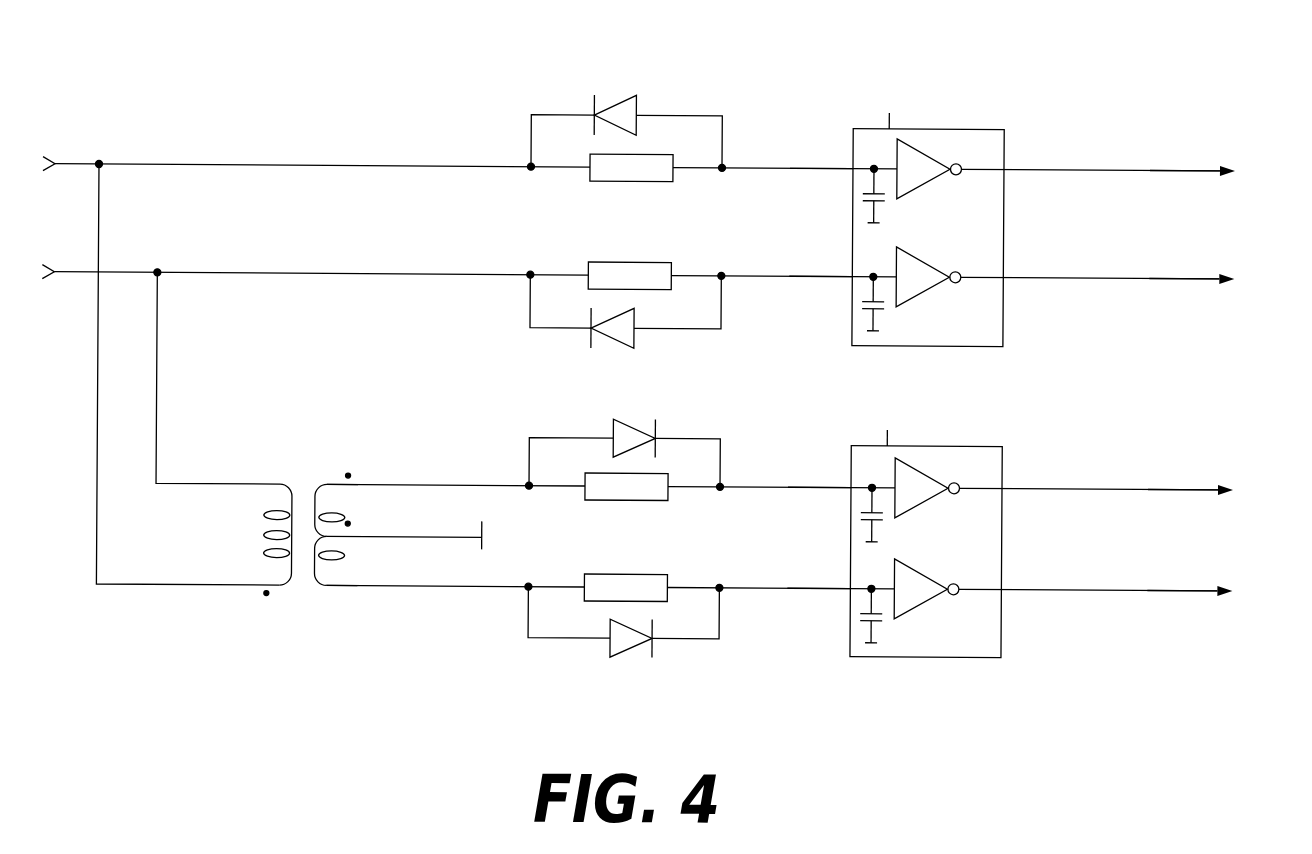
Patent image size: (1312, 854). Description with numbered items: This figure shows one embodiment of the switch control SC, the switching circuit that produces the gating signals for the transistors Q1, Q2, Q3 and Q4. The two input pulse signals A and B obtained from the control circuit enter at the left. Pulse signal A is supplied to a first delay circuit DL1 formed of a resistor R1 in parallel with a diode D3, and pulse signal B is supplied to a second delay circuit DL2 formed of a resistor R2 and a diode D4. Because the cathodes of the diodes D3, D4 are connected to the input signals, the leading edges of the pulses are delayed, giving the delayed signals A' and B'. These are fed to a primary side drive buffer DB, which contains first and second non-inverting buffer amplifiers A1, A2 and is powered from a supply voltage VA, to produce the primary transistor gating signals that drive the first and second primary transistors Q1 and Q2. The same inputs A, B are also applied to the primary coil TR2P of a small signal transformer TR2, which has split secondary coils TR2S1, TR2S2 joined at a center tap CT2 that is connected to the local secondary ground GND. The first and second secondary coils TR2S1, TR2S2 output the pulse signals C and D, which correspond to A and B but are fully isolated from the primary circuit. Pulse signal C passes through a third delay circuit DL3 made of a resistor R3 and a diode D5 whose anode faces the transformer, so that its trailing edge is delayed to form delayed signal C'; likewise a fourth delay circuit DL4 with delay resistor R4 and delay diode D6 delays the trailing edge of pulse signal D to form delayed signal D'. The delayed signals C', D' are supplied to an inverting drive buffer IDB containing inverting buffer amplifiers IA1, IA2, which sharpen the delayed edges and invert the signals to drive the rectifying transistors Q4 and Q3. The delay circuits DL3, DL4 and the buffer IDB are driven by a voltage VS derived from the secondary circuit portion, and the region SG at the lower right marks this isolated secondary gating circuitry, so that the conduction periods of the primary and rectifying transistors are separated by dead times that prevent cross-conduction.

The pulse signal A is at (37, 162).
The pulse signal B is at (36, 270).
The pulse signal C is at (352, 471).
The pulse signal D is at (351, 603).
The switch control SC is at (476, 88).
The signal group circuit SG is at (766, 652).
The first delay circuit DL1 is at (705, 88).
The second delay circuit DL2 is at (705, 253).
The third delay circuit DL3 is at (703, 418).
The fourth delay circuit DL4 is at (703, 566).
The diode D3 is at (614, 95).
The diode D4 is at (622, 345).
The third delay circuit diode D5 is at (612, 426).
The delay diode D6 is at (613, 652).
The resistor R1 is at (658, 178).
The resistor R2 is at (600, 259).
The third delay circuit resistor R3 is at (660, 497).
The delay resistor R4 is at (598, 571).
The primary side drive buffer DB is at (1004, 129).
The inverting drive buffer IDB is at (1004, 448).
The supply voltage VA is at (893, 104).
The voltage VS is at (890, 421).
The first non-inverting buffer amplifier A1 is at (926, 182).
The second non-inverting buffer amplifier A2 is at (926, 290).
The inverting buffer amplifier IA1 is at (926, 501).
The inverting buffer amplifier IA2 is at (926, 602).
The delayed signal A' is at (821, 147).
The delayed signal B' is at (820, 296).
The delayed signal C' is at (819, 472).
The delayed signal D' is at (818, 609).
The first primary transistor Q1 is at (1249, 182).
The second primary transistor Q2 is at (1248, 286).
The first rectifying transistor Q3 is at (1246, 597).
The second rectifying transistor Q4 is at (1247, 496).
The small signal transformer TR2 is at (301, 527).
The primary coil TR2P is at (264, 534).
The first small signal transformer secondary coil TR2S1 is at (346, 516).
The second small signal transformer secondary coil TR2S2 is at (346, 554).
The small signal transformer center tap CT2 is at (484, 519).
The local ground of the secondary circuit GND is at (484, 547).